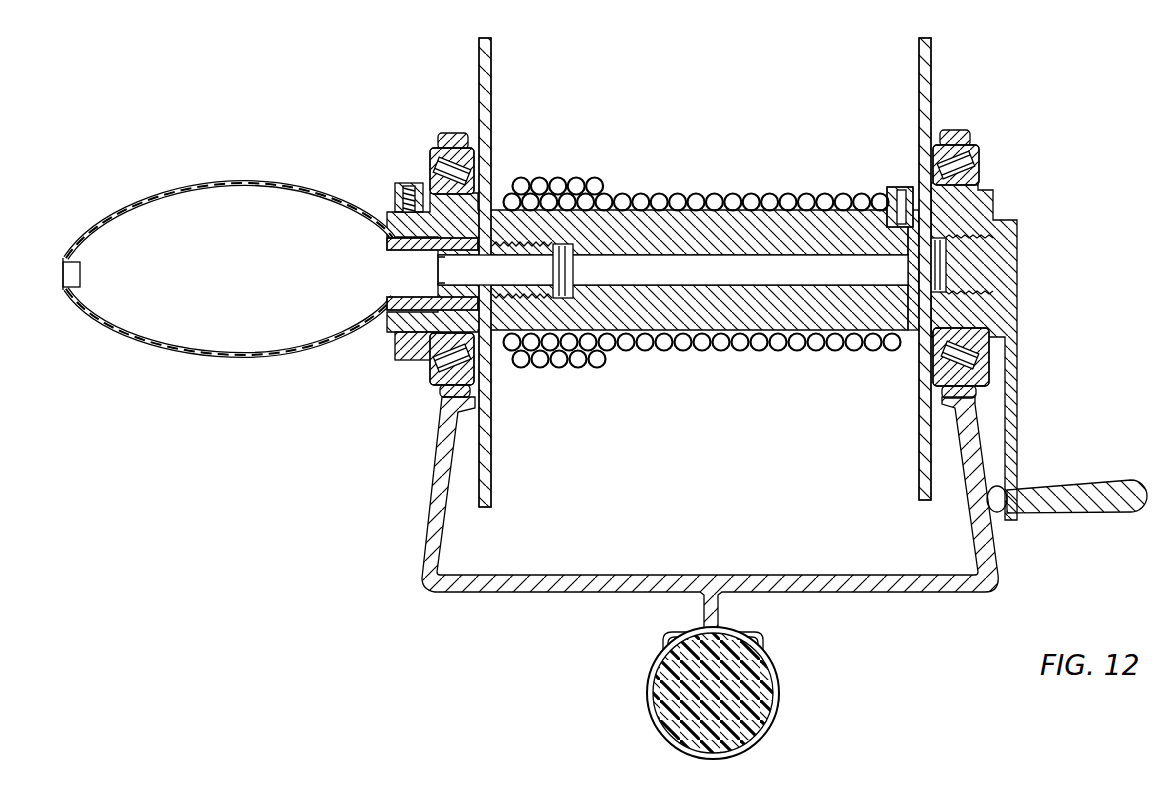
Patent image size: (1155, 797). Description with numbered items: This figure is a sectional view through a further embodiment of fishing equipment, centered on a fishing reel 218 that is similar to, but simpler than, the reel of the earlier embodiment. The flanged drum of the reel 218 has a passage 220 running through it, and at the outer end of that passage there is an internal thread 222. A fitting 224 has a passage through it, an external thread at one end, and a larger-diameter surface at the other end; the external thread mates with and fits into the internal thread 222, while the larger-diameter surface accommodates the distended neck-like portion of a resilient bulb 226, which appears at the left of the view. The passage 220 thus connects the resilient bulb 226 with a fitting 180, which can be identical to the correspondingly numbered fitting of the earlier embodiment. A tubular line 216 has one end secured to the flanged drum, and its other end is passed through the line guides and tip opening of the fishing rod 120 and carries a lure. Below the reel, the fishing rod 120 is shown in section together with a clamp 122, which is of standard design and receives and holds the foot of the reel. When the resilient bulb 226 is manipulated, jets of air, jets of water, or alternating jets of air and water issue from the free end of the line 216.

The fishing reel 218 is at (745, 114).
The fitting 224 is at (543, 243).
The internal thread 222 is at (576, 246).
The passage 220 is at (800, 270).
The fitting 180 is at (909, 205).
The tubular line 216 is at (650, 348).
The resilient bulb 226 is at (257, 360).
The clamp 122 is at (745, 634).
The fishing rod 120 is at (765, 682).